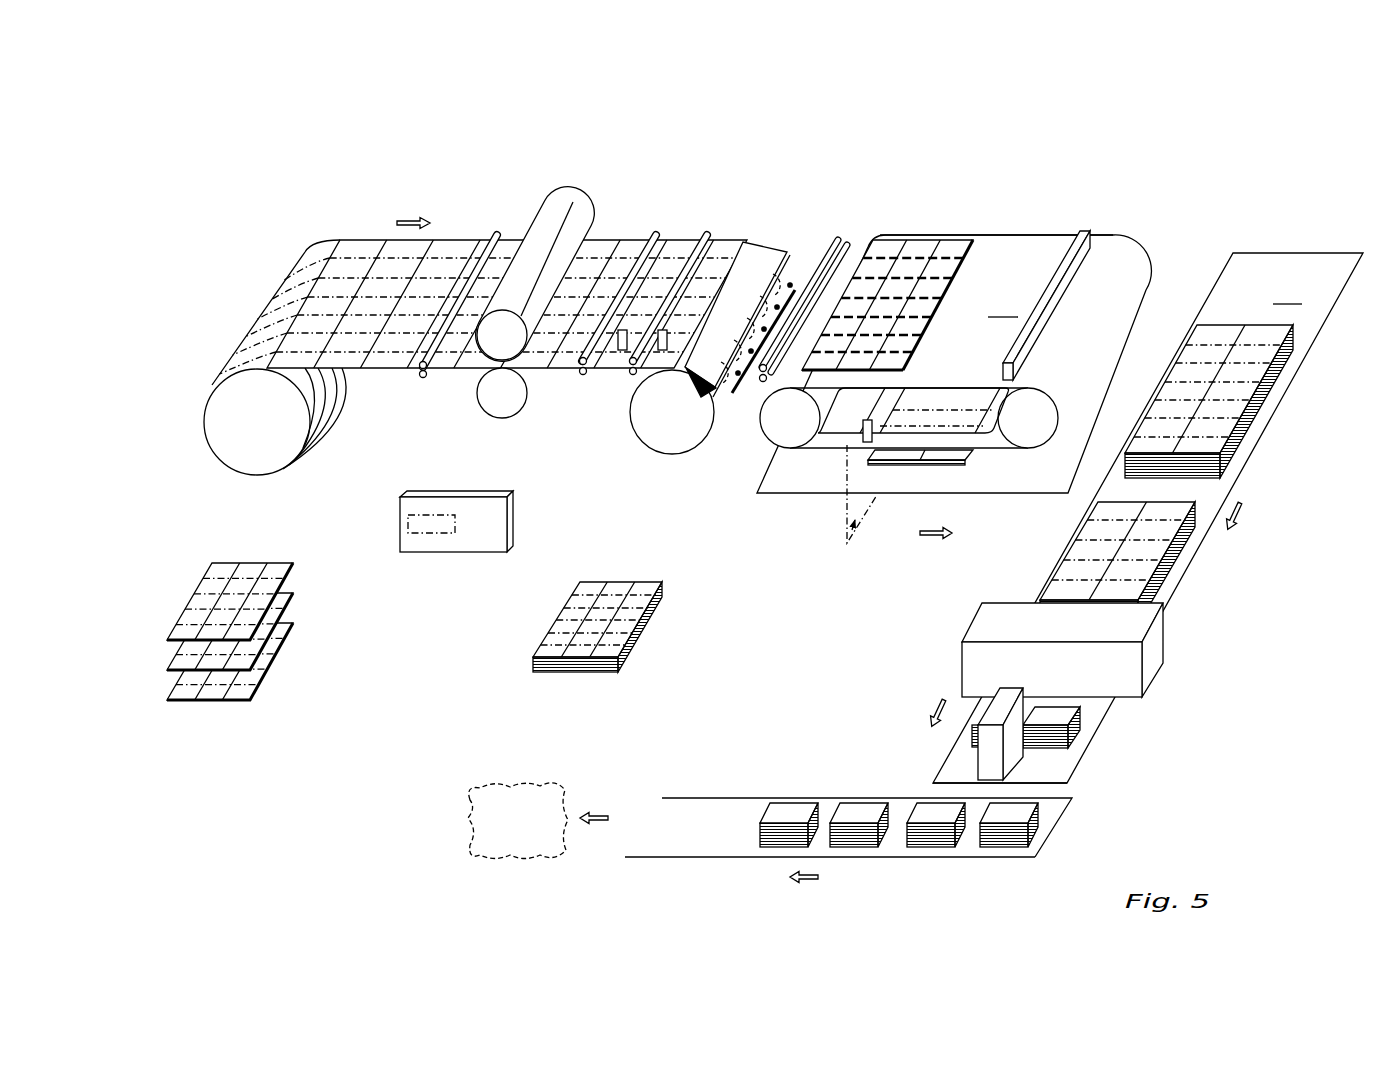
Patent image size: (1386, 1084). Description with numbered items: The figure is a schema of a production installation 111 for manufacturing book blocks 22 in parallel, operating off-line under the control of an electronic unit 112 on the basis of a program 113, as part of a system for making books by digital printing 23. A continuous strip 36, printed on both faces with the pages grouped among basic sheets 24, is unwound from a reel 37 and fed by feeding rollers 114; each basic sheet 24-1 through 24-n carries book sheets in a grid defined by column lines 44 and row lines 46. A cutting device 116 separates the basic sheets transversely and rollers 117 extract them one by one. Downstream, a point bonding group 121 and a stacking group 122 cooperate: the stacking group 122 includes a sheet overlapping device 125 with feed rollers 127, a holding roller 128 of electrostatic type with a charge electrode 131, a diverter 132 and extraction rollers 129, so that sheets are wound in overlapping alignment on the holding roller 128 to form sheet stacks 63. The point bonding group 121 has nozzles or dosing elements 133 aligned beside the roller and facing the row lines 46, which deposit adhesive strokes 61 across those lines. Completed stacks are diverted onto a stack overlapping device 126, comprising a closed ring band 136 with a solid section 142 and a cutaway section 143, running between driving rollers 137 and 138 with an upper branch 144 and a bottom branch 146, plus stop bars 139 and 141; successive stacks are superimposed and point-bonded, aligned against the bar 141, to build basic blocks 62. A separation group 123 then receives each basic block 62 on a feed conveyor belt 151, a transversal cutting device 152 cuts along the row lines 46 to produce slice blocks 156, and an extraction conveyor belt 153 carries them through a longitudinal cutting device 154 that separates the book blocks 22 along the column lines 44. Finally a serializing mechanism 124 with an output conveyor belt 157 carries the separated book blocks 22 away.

The production installation for book blocks in parallel 111 is at (747, 492).
The block books 22 is at (853, 792).
The digital printing 23 is at (503, 780).
The basic sheets 24 is at (662, 233).
The basic sheet (n-th) 24-n is at (284, 567).
The basic sheet (first) 24-1 is at (247, 702).
The strip 36 is at (343, 372).
The reel 37 is at (218, 428).
The column lines 44 is at (1235, 328).
The row lines 46 is at (748, 355).
The adhesive strokes 61 is at (922, 297).
The basic blocks 62 is at (942, 492).
The sheet stacks 63 is at (554, 453).
The electronic unit 112 is at (472, 504).
The program 113 is at (456, 524).
The feeding rollers 114 is at (425, 381).
The cutting device 116 is at (533, 212).
The rollers 117 is at (580, 375).
The point bonding group 121 is at (820, 290).
The stacking group 122 is at (647, 287).
The separation group 123 is at (1303, 247).
The serializing mechanism 124 is at (889, 839).
The sheet overlapping device 125 is at (836, 367).
The stack overlapping device 126 is at (973, 343).
The feed rollers 127 is at (632, 376).
The holding roller 128 is at (668, 445).
The extraction rollers 129 is at (836, 245).
The electrode 131 is at (718, 234).
The diverter 132 is at (757, 246).
The nozzles or dosing elements 133 is at (745, 400).
The closed ring band 136 is at (954, 364).
The driving roller 137 is at (776, 442).
The driving roller 138 is at (1046, 442).
The stop bar 139 is at (1058, 240).
The stop bar 141 is at (864, 440).
The solid section 142 is at (983, 238).
The cutaway section 143 is at (915, 440).
The upper branch 144 is at (1046, 281).
The bottom branch 146 is at (817, 452).
The feed conveyor belt 151 is at (1287, 293).
The transversal cutting device 152 is at (945, 633).
The extraction conveyor belt 153 is at (1062, 772).
The longitudinal cutting device 154 is at (968, 762).
The slice blocks 156 is at (1092, 725).
The output conveyor belt 157 is at (710, 847).